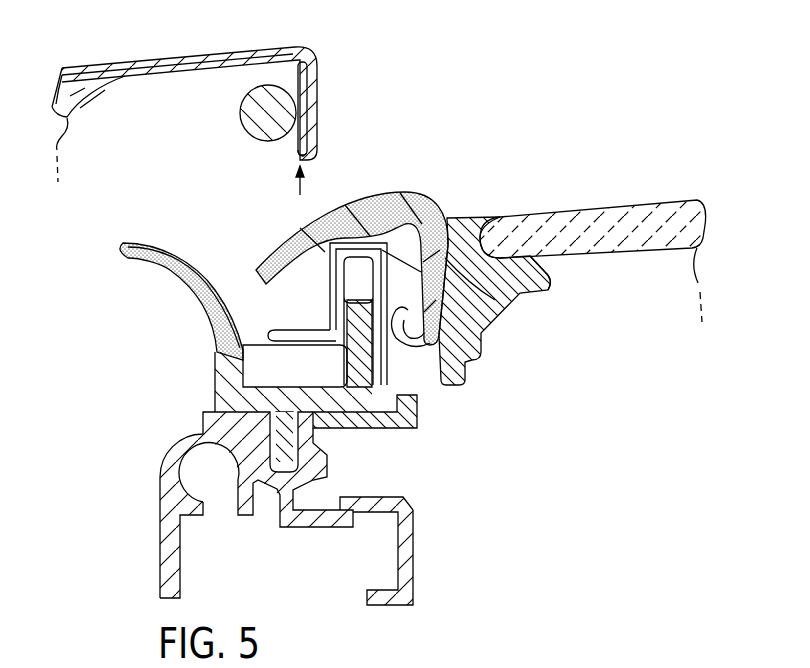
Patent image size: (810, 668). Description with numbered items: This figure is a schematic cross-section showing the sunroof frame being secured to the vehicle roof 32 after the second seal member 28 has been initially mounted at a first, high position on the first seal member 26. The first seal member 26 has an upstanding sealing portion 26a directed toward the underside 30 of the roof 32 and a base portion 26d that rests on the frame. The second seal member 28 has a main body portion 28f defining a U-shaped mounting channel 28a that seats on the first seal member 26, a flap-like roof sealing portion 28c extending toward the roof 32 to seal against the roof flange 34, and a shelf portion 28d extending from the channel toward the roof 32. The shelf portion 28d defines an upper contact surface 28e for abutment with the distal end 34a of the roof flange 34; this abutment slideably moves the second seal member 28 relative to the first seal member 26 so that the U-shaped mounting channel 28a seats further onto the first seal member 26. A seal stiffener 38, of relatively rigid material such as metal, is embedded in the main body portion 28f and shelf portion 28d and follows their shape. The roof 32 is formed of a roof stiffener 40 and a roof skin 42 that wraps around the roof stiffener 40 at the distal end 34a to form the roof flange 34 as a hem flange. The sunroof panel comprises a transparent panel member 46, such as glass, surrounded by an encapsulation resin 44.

The first seal member 26 is at (260, 424).
The sealing portion 26a is at (185, 280).
The base portion 26d is at (314, 424).
The second seal member 28 is at (422, 256).
The U-shaped mounting channel 28a is at (357, 280).
The roof sealing portion 28c is at (273, 262).
The shelf portion 28d is at (262, 350).
The upper contact surface 28e is at (313, 335).
The main body portion 28f is at (549, 286).
The underside 30 is at (222, 86).
The roof 32 is at (223, 103).
The roof flange 34 is at (338, 115).
The distal end 34a is at (300, 163).
The seal stiffener 38 is at (297, 356).
The roof stiffener 40 is at (85, 98).
The roof skin 42 is at (153, 60).
The encapsulation resin 44 is at (490, 312).
The sunroof transparent panel member 46 is at (590, 226).